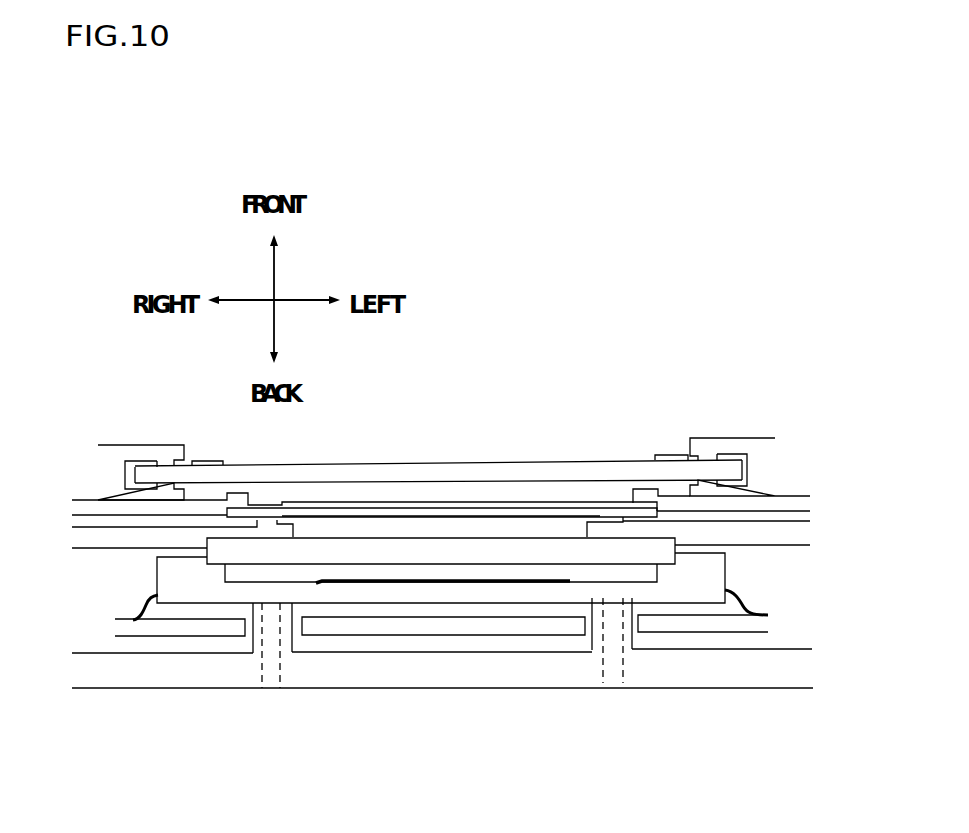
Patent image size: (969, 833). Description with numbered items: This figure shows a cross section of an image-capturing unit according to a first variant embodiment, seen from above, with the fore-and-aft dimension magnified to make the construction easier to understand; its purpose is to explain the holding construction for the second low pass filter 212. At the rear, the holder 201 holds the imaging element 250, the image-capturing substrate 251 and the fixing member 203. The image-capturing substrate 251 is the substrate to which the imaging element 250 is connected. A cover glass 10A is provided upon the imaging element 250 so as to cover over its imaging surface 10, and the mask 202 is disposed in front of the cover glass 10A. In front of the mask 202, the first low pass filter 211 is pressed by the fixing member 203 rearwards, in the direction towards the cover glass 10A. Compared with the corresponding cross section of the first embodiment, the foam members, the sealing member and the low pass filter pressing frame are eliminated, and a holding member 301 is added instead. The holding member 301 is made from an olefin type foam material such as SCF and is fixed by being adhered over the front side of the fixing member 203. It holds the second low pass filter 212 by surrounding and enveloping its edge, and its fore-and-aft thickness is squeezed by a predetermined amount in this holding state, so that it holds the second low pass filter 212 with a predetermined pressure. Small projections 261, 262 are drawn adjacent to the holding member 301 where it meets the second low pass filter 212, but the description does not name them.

The imaging surface 10 is at (347, 582).
The cover glass 10A is at (424, 548).
The holder 201 is at (797, 667).
The mask 202 is at (780, 532).
The fixing member 203 is at (780, 502).
The first low pass filter 211 is at (572, 515).
The second low pass filter 212 is at (510, 468).
The imaging element 250 is at (708, 572).
The image-capturing substrate 251 is at (193, 628).
The left projection 261 is at (662, 457).
The right projection 262 is at (210, 460).
The holding member 301 is at (110, 482).